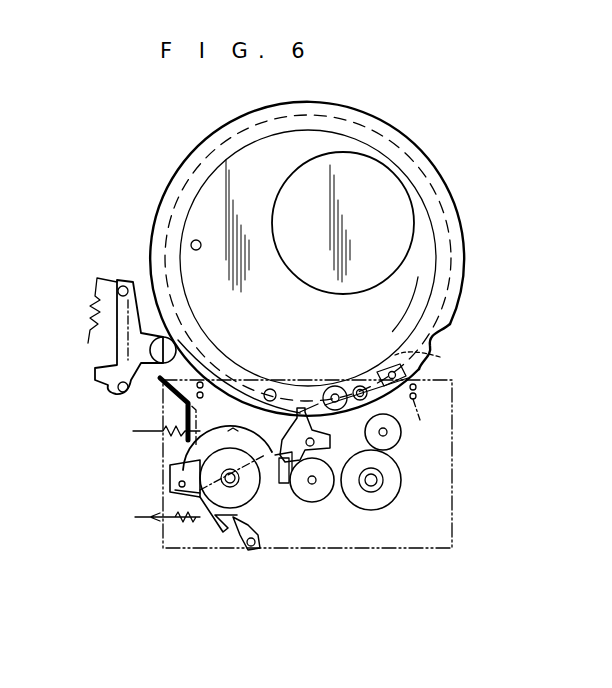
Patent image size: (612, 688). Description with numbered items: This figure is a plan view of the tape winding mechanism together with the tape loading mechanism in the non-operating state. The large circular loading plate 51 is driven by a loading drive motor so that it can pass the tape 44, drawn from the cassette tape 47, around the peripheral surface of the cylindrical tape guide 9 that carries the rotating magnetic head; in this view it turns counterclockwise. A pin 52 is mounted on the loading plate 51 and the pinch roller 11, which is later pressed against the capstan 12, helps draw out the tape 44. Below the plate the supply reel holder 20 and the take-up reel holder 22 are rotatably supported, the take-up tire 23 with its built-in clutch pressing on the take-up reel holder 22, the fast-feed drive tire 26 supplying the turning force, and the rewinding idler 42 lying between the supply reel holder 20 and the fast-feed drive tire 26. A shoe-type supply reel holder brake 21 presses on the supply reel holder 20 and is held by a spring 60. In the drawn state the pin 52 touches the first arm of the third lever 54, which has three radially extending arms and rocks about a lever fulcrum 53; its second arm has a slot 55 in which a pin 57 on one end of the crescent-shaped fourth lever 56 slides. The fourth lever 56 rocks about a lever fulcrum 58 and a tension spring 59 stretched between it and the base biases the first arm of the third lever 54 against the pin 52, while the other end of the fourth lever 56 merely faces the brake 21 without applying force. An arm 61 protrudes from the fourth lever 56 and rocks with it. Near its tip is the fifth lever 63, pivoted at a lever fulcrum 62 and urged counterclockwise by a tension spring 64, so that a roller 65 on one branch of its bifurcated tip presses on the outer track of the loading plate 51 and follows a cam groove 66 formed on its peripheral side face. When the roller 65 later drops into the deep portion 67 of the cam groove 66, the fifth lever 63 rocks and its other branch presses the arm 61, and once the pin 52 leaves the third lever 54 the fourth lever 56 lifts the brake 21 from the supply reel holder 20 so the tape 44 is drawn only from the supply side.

The cylindrical tape guide 9 is at (300, 172).
The pinch roller 11 is at (338, 396).
The capstan 12 is at (197, 240).
The supply reel holder 20 is at (245, 513).
The supply reel holder brake 21 is at (255, 550).
The take-up reel holder 22 is at (399, 483).
The take-up tire 23 is at (397, 437).
The fast-feed drive tire 26 is at (322, 492).
The rewinding idler 42 is at (272, 413).
The tape 44 is at (420, 420).
The cassette tape 47 is at (452, 395).
The loading plate 51 is at (467, 265).
The pin 52 is at (298, 410).
The lever fulcrum 53 is at (316, 445).
The third lever 54 is at (318, 404).
The slot 55 is at (303, 500).
The fourth lever 56 is at (170, 478).
The pin 57 is at (265, 462).
The lever fulcrum 58 is at (180, 490).
The tension spring 59 is at (140, 433).
The spring 60 is at (163, 520).
The arm 61 is at (162, 393).
The lever fulcrum 62 is at (123, 286).
The fifth lever 63 is at (120, 345).
The tension spring 64 is at (90, 312).
The roller 65 is at (178, 350).
The cam groove 66 is at (430, 187).
The deep portion 67 is at (431, 358).